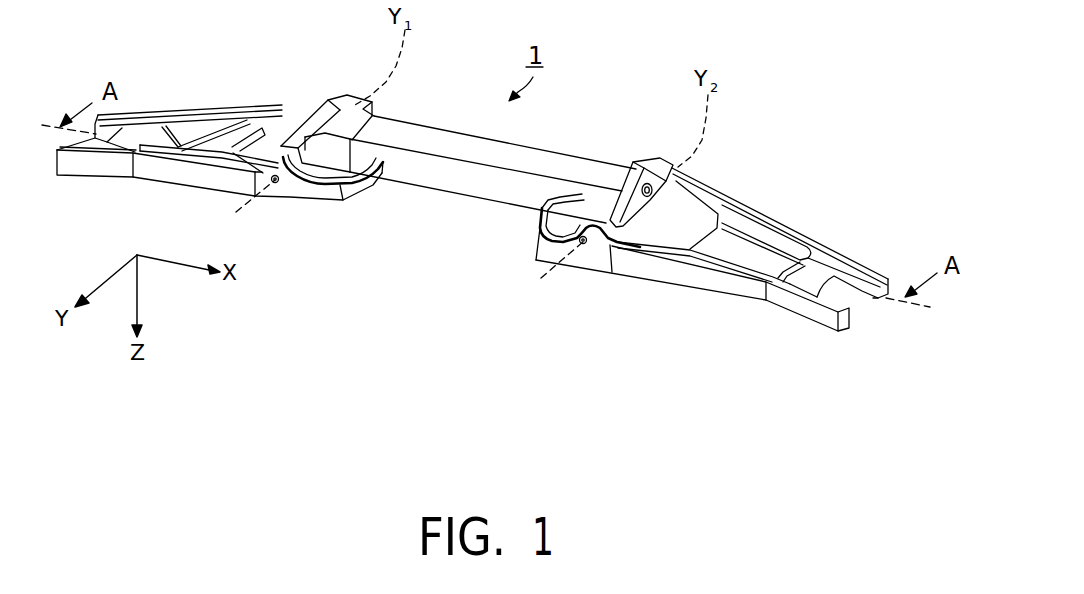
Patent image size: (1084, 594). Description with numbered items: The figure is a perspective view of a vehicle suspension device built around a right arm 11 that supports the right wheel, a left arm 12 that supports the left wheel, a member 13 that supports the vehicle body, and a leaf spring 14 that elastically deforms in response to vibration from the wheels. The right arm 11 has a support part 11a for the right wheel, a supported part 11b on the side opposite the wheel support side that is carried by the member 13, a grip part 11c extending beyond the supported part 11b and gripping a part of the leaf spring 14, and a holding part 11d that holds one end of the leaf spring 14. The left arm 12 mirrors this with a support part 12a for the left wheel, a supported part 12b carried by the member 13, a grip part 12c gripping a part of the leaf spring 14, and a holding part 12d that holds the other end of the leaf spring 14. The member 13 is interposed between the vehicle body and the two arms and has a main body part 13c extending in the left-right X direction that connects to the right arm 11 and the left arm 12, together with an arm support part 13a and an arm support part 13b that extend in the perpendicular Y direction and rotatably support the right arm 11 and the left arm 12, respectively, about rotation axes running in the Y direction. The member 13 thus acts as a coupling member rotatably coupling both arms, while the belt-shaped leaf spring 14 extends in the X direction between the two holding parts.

The right arm 11 is at (215, 105).
The support part 11a is at (170, 176).
The supported part 11b is at (277, 194).
The grip part 11c is at (342, 198).
The holding part 11d is at (182, 137).
The left arm 12 is at (853, 250).
The support part 12a is at (697, 282).
The supported part 12b is at (593, 257).
The grip part 12c is at (540, 240).
The holding part 12d is at (745, 253).
The member 13 is at (566, 148).
The arm support part 13a is at (327, 113).
The arm support part 13b is at (648, 163).
The main body part 13c is at (422, 140).
The leaf spring 14 is at (450, 198).